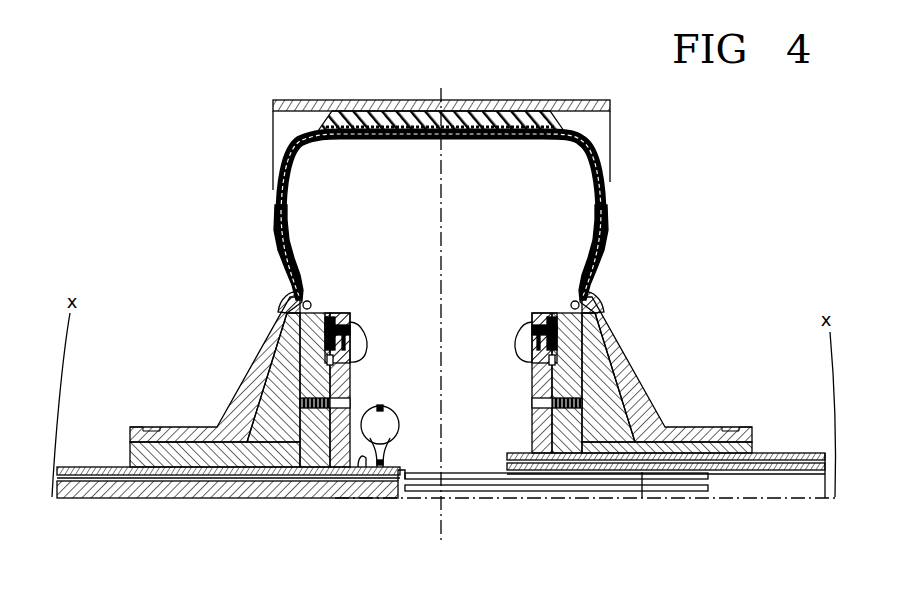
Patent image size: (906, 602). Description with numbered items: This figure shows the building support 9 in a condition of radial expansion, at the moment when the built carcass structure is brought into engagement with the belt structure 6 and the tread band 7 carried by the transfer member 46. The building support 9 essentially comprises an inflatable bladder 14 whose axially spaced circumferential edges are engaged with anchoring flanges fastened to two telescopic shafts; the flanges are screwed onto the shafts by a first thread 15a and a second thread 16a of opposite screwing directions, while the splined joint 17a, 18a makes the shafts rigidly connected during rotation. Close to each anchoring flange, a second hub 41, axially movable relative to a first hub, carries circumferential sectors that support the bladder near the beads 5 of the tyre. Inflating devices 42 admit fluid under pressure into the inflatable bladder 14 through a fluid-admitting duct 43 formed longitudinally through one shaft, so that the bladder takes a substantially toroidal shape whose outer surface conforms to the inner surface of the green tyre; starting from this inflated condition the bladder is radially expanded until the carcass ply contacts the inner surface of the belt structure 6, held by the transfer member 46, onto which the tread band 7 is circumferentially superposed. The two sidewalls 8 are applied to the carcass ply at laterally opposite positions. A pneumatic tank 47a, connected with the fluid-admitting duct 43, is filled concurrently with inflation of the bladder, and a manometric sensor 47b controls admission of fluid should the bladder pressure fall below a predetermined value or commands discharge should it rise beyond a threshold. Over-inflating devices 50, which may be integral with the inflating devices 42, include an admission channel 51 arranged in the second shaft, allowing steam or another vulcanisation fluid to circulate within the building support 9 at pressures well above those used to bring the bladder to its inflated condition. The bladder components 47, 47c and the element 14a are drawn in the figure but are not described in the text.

The beads 5 is at (287, 290).
The belt structure 6 is at (550, 110).
The tread band 7 is at (340, 112).
The sidewalls 8 is at (275, 195).
The building support 9 is at (460, 172).
The inflatable bladder 14 is at (607, 182).
The carcass turn-up clamp 14a is at (333, 313).
The first thread 15a is at (365, 463).
The second thread 16a is at (505, 470).
The splined joint 17a is at (597, 498).
The splined joint 18a is at (683, 498).
The second hub 41 is at (253, 362).
The inflating devices 42 is at (75, 462).
The fluid-admitting duct 43 is at (102, 481).
The transfer member 46 is at (290, 100).
The bladder 47 is at (437, 389).
The pneumatic tank 47a is at (390, 416).
The manometric sensor 47b is at (395, 462).
The bladder tip 47c is at (380, 405).
The over-inflating devices 50 is at (815, 447).
The admission channel 51 is at (772, 462).